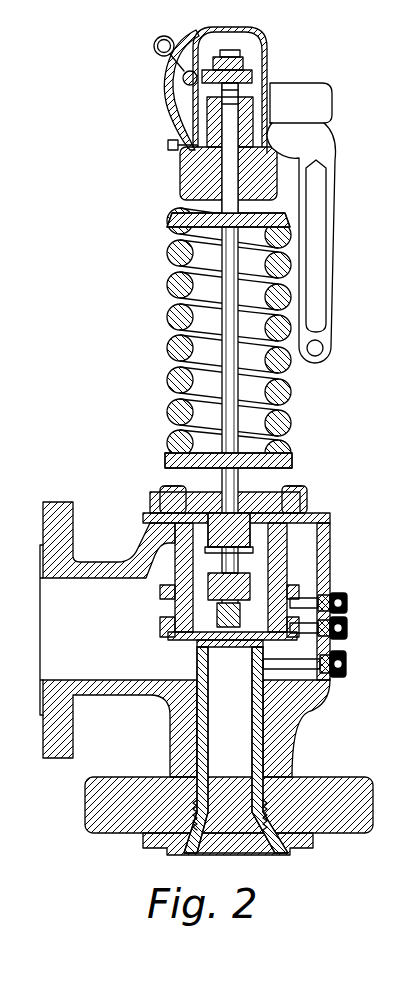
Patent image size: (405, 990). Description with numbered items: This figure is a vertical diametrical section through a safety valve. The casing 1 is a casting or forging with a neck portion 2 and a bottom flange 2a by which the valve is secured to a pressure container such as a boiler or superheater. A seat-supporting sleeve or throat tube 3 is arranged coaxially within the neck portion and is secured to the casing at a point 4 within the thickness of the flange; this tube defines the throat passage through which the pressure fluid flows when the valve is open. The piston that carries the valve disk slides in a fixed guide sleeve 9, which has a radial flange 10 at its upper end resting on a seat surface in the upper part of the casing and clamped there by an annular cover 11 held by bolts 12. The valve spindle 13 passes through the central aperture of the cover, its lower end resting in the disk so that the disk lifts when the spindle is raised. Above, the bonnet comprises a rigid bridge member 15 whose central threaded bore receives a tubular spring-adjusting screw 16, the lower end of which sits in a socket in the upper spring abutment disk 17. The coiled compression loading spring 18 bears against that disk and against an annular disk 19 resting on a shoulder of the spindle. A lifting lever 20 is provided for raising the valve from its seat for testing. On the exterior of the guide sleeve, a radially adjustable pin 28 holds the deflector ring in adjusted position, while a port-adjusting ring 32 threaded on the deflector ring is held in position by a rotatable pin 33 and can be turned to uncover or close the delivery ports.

The casing 1 is at (330, 572).
The neck portion 2 is at (280, 748).
The bottom flange 2a is at (333, 783).
The seat-supporting sleeve or throat tube 3 is at (252, 755).
The securing point 4 is at (268, 803).
The fixed guide sleeve 9 is at (313, 553).
The radial flange 10 is at (317, 530).
The annular cover 11 is at (309, 513).
The bolts 12 is at (291, 490).
The valve spindle 13 is at (223, 483).
The rigid bridge member 15 is at (187, 180).
The spring-adjusting screw 16 is at (178, 195).
The upper spring abutment disk 17 is at (168, 218).
The coiled compression loading spring 18 is at (176, 253).
The annular disk 19 is at (167, 463).
The lifting lever 20 is at (333, 208).
The radially adjustable pin 28 is at (307, 592).
The port-adjusting ring 32 is at (318, 665).
The rotatable pin 33 is at (335, 627).